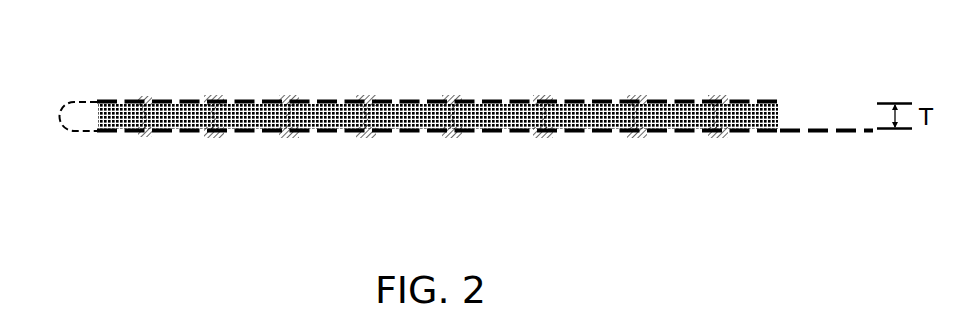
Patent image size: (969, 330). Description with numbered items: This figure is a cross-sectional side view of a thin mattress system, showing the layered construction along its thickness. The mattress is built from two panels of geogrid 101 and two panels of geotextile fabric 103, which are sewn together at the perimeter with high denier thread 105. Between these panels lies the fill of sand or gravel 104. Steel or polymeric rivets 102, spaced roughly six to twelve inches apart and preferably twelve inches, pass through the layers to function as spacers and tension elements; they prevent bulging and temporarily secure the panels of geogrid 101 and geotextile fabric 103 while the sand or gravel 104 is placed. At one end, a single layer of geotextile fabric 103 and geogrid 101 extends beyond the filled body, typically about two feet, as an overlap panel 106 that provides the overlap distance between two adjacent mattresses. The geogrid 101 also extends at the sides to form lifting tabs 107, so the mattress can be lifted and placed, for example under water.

The geogrid 101 is at (395, 135).
The rivets 102 is at (718, 100).
The geotextile fabric 103 is at (328, 102).
The sand or gravel 104 is at (580, 113).
The high denier thread 105 is at (110, 120).
The overlap panel 106 is at (818, 130).
The lifting tabs 107 is at (70, 103).